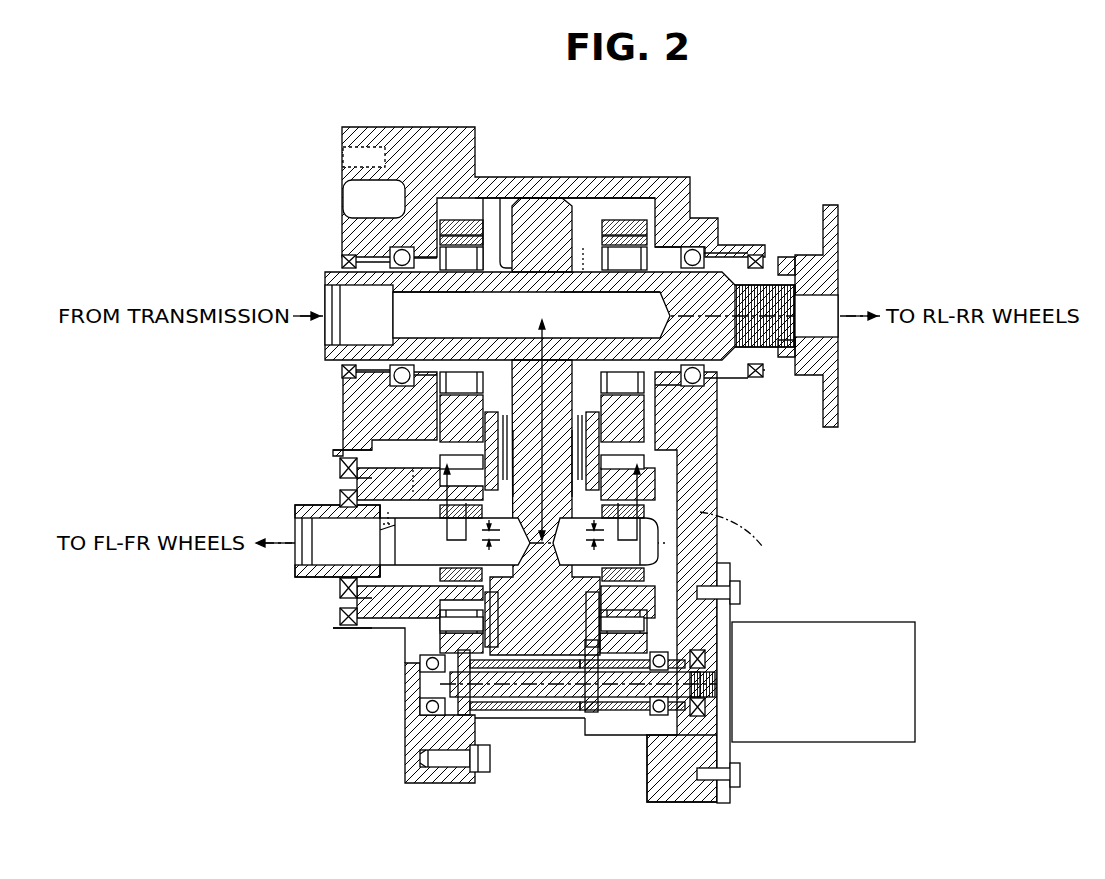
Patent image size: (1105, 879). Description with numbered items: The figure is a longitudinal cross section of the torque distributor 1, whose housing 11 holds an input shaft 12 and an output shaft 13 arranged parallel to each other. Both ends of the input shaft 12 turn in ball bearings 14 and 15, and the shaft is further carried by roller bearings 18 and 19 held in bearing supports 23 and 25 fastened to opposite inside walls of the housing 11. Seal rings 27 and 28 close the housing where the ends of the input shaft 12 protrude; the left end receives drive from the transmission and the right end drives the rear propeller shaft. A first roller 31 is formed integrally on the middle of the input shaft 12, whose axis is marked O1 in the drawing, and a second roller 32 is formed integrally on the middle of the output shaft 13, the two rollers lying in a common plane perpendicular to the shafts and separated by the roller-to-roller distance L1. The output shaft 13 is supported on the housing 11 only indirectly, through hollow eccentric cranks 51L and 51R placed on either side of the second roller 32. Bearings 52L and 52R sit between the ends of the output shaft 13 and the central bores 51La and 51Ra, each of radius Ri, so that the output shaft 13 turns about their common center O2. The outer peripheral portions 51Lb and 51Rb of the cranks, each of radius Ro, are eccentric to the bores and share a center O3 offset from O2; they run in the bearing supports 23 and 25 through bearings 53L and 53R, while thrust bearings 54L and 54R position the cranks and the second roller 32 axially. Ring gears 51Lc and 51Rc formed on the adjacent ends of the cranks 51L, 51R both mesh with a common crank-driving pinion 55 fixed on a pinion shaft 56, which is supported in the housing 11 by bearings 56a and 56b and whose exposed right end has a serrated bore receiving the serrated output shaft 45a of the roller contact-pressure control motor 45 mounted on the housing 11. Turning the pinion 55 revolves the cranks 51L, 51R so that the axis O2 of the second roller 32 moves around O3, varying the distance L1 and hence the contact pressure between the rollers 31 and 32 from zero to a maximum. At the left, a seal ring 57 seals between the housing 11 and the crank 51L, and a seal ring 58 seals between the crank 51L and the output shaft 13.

The torque distributor 1 is at (615, 180).
The housing 11 is at (462, 137).
The input shaft 12 is at (505, 257).
The output shaft 13 is at (302, 577).
The ball bearing 14 is at (342, 256).
The ball bearing 15 is at (693, 252).
The roller bearing 18 is at (434, 298).
The roller bearing 19 is at (627, 278).
The bearing support 23 is at (470, 217).
The bearing support 25 is at (623, 222).
The seal ring 27 is at (340, 263).
The seal ring 28 is at (765, 257).
The first roller 31 is at (547, 194).
The second roller 32 is at (548, 700).
The roller contact-pressure control motor 45 is at (852, 622).
The output shaft of control motor 45a is at (718, 687).
The eccentric crank 51L is at (398, 642).
The central bore 51La is at (341, 632).
The outer peripheral portion 51Lb is at (442, 420).
The ring gear 51Lc is at (505, 720).
The eccentric crank 51R is at (656, 479).
The central bore 51Ra is at (650, 490).
The outer peripheral portion 51Rb is at (645, 416).
The ring gear 51Rc is at (591, 720).
The bearing 52L is at (445, 625).
The bearing 52R is at (648, 499).
The bearing 53L is at (405, 690).
The bearing 53R is at (652, 617).
The thrust bearing 54L is at (502, 514).
The thrust bearing 54R is at (579, 514).
The crank-driving pinion 55 is at (563, 720).
The pinion shaft 56 is at (648, 700).
The bearing 56a is at (430, 710).
The bearing 56b is at (652, 715).
The seal ring 57 is at (338, 470).
The seal ring 58 is at (338, 497).
The input shaft axis point O1 is at (583, 249).
The geometric center of central bores O2 is at (384, 508).
The geometric center of eccentric outer peripheral portions O3 is at (592, 505).
The roller-to-roller distance L1 is at (558, 320).
The radius of outer peripheral portion Ro is at (462, 470).
The radius of central bore Ri is at (498, 492).